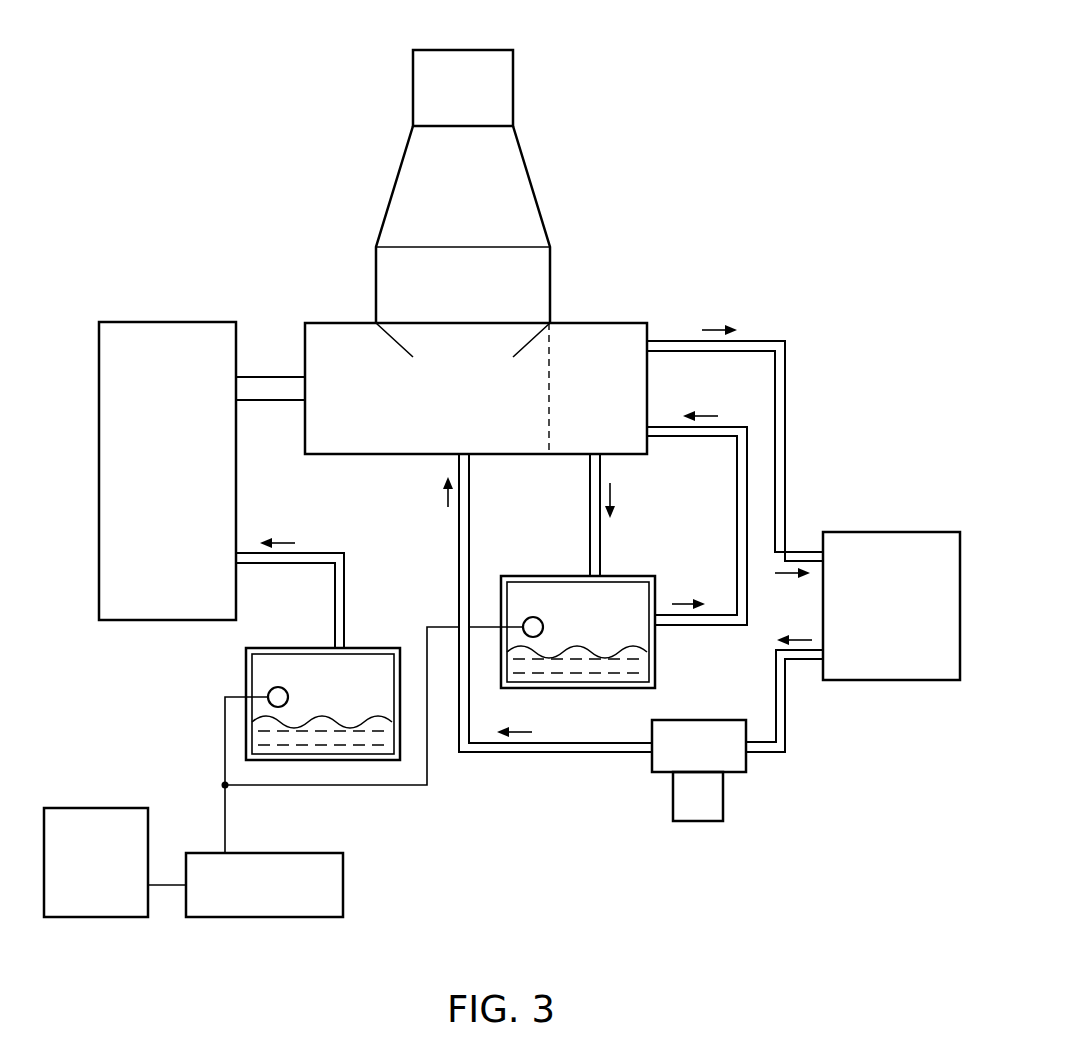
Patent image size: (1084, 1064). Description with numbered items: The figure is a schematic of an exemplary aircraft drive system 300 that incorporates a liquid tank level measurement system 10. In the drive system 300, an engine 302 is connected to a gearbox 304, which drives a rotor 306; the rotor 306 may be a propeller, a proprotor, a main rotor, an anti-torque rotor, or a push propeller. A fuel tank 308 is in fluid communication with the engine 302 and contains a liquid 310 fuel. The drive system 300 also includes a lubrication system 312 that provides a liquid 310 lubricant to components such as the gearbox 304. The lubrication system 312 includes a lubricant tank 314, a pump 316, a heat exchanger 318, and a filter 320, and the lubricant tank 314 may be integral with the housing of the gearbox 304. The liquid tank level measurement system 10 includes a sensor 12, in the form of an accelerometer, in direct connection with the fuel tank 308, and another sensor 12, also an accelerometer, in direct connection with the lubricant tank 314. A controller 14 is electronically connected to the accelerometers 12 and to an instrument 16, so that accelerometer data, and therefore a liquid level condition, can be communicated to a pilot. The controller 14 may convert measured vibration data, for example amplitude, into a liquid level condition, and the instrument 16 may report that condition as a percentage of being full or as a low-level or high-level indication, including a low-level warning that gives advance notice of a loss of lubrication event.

The aircraft drive system 300 is at (283, 111).
The liquid tank level measurement system 10 is at (122, 696).
The sensor 12 is at (278, 687).
The controller 14 is at (262, 917).
The instrument 16 is at (95, 917).
The engine 302 is at (166, 322).
The gearbox 304 is at (441, 410).
The rotor 306 is at (532, 85).
The fuel tank 308 is at (246, 680).
The liquid 310 is at (323, 720).
The lubrication system 312 is at (808, 364).
The lubricant tank 314 is at (637, 576).
The pump 316 is at (598, 323).
The heat exchanger 318 is at (890, 680).
The filter 320 is at (723, 795).